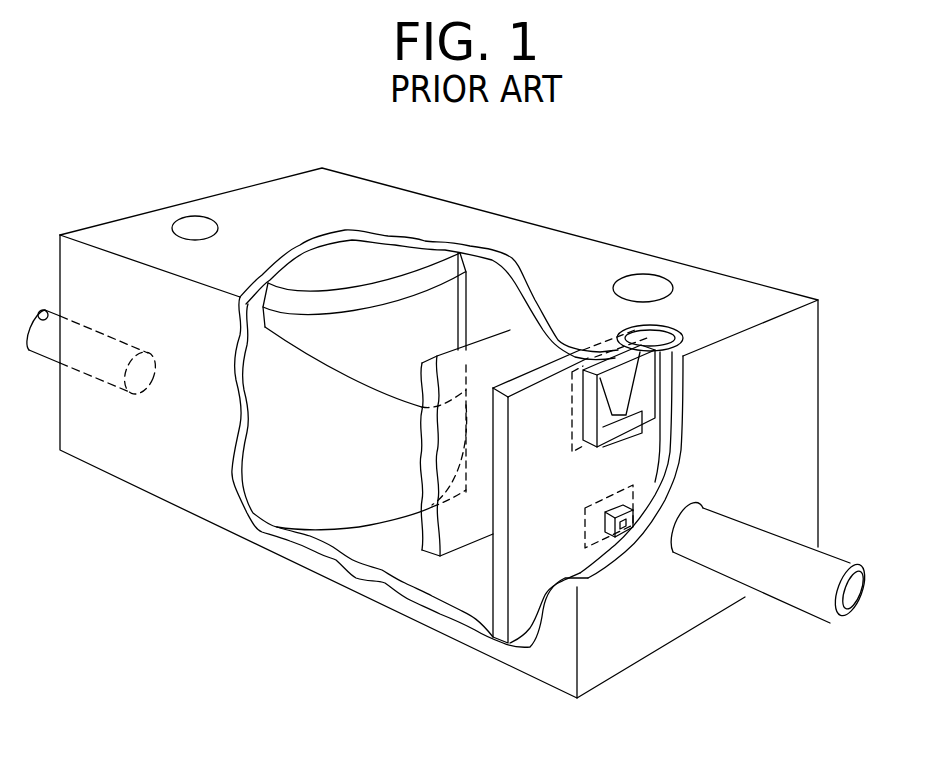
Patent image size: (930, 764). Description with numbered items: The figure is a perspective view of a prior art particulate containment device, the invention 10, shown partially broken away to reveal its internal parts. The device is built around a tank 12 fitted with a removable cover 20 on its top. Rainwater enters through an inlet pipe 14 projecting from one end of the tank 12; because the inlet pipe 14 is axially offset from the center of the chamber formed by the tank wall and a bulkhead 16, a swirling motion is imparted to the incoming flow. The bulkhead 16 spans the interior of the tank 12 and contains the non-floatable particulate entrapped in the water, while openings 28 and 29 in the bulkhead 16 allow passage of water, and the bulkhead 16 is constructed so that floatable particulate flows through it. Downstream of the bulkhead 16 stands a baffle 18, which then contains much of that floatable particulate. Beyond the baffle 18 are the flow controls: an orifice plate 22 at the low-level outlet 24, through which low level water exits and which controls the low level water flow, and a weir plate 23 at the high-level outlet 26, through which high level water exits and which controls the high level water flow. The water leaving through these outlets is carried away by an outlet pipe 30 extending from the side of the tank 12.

The invention 10 is at (636, 187).
The tank 12 is at (352, 173).
The inlet pipe 14 is at (43, 358).
The bulkhead 16 is at (343, 462).
The baffle 18 is at (433, 553).
The removable cover 20 is at (196, 226).
The orifice plate 22 is at (585, 527).
The weir plate 23 is at (571, 408).
The low-level outlet 24 is at (637, 512).
The high-level outlet 26 is at (612, 415).
The opening in bulkhead 28 is at (421, 302).
The opening in bulkhead 29 is at (465, 443).
The outlet pipe 30 is at (798, 613).